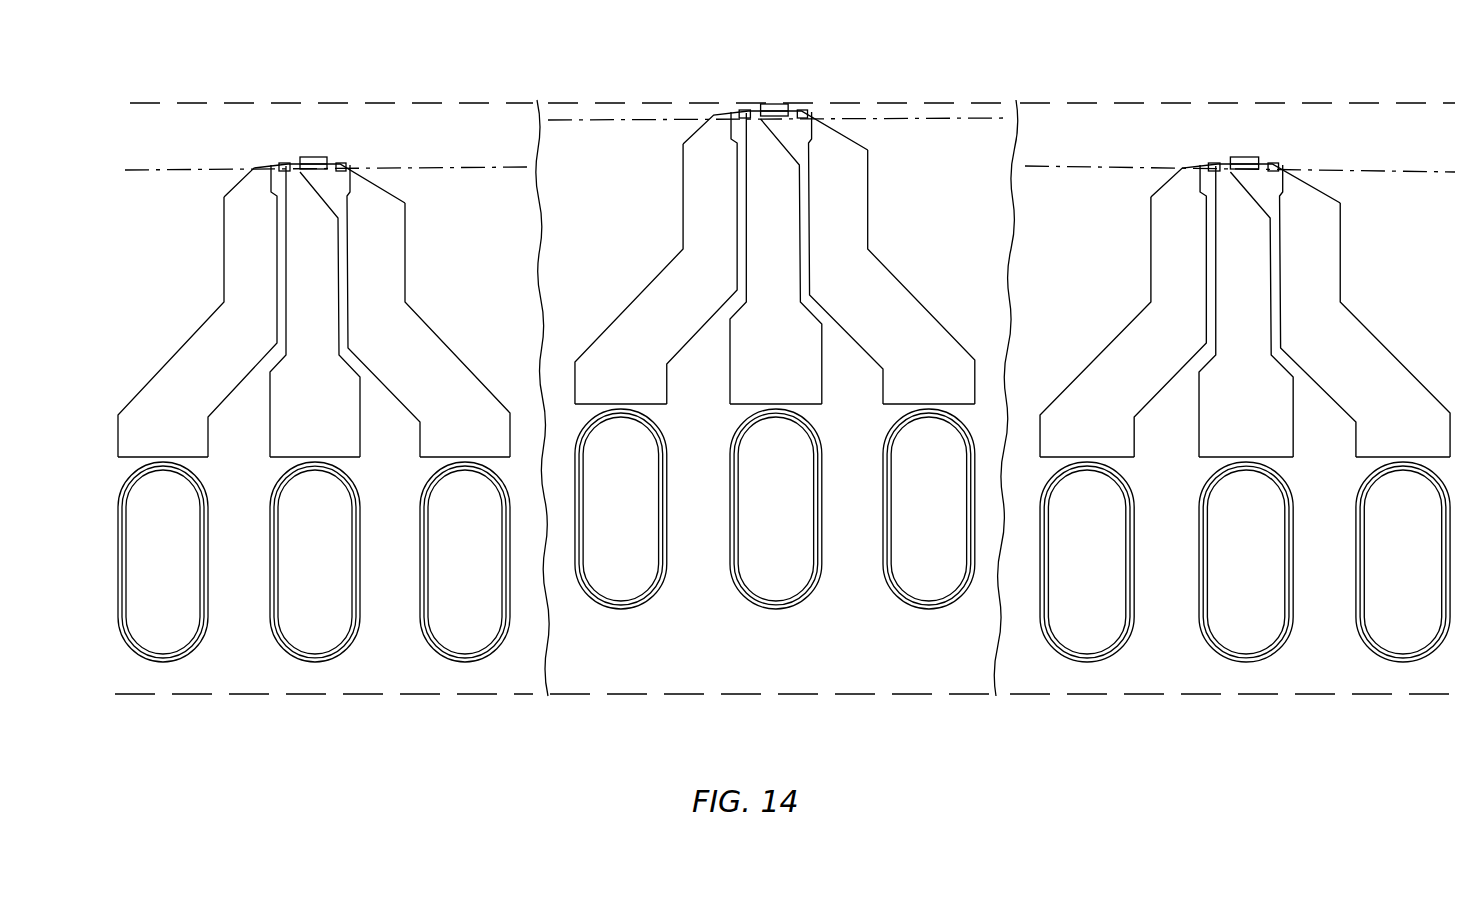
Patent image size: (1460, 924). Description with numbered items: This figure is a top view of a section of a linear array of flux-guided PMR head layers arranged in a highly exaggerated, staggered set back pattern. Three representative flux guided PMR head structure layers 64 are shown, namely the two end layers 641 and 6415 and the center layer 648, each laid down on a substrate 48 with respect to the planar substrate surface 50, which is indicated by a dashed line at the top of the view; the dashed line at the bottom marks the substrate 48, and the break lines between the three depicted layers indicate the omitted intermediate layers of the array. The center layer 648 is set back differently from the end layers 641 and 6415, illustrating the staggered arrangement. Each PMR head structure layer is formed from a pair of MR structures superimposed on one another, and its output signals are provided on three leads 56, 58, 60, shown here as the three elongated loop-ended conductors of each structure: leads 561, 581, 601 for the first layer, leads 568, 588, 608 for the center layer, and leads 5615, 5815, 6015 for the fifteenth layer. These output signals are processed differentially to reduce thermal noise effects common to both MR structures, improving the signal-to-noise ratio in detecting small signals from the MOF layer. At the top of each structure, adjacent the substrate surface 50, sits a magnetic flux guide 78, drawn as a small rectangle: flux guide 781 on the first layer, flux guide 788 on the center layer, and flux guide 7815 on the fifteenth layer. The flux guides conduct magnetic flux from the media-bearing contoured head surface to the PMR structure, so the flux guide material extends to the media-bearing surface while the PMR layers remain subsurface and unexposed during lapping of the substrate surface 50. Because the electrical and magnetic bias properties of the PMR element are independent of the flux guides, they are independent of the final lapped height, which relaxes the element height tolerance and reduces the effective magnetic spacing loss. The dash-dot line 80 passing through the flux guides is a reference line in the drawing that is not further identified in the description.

The substrate 48 is at (127, 683).
The substrate surface 50 is at (235, 108).
The reference line 80 is at (165, 173).
The flux guided PMR head structure layer 64 is at (314, 257).
The first flux guided PMR head structure layer 641 is at (330, 146).
The center flux guided PMR head structure layer 648 is at (760, 88).
The fifteenth flux guided PMR head structure layer 6415 is at (1247, 142).
The magnetic flux guide 78 is at (282, 146).
The first magnetic flux guide 781 is at (300, 157).
The eighth magnetic flux guide 788 is at (782, 102).
The fifteenth magnetic flux guide 7815 is at (1250, 158).
The lead 56 is at (181, 575).
The first lead of first PMR structure 561 is at (173, 637).
The first lead of eighth PMR structure 568 is at (618, 592).
The first lead of fifteenth PMR structure 5615 is at (1102, 632).
The lead 58 is at (331, 575).
The second lead of first PMR structure 581 is at (323, 637).
The second lead of eighth PMR structure 588 is at (773, 592).
The second lead of fifteenth PMR structure 5815 is at (1255, 632).
The lead 60 is at (477, 575).
The third lead of first PMR structure 601 is at (470, 637).
The third lead of eighth PMR structure 608 is at (918, 592).
The third lead of fifteenth PMR structure 6015 is at (1390, 643).